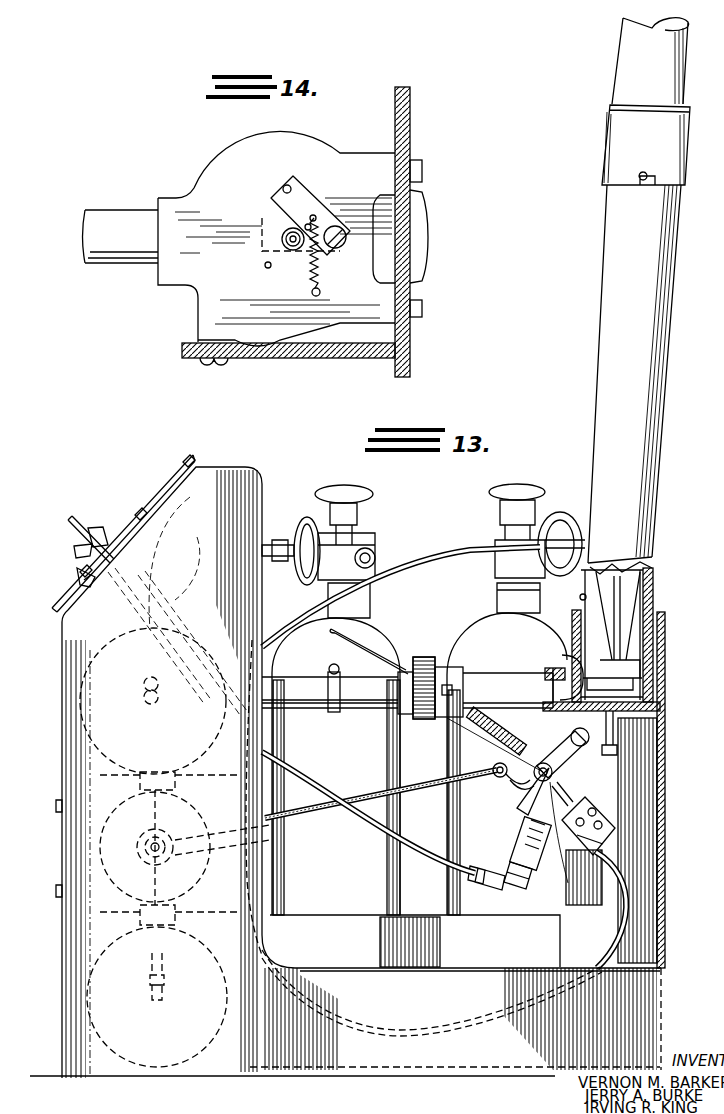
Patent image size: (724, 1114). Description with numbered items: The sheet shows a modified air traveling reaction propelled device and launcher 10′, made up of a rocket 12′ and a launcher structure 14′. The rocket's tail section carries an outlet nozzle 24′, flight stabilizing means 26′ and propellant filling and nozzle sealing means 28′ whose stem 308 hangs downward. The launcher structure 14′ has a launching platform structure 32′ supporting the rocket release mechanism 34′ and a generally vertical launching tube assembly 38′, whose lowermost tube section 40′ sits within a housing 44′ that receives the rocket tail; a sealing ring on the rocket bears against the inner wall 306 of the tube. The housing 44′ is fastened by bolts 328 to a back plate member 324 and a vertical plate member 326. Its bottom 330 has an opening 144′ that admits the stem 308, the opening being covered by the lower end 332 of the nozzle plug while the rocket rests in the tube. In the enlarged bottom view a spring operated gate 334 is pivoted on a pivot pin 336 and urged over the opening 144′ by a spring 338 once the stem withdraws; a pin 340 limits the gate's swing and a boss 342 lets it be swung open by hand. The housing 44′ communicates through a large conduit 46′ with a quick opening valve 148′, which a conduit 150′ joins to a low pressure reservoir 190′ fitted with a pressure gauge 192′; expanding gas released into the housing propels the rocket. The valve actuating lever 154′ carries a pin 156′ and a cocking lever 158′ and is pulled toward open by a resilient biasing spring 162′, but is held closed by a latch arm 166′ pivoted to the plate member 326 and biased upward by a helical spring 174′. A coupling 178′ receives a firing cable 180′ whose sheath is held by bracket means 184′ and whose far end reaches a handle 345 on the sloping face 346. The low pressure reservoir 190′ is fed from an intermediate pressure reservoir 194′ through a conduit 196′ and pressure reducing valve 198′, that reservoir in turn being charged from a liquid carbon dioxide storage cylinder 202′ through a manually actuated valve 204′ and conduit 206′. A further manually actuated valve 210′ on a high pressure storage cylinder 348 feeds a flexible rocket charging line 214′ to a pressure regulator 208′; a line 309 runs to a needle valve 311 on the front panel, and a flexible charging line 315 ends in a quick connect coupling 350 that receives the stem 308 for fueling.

In FIG. 13, the air traveling reaction propelled device and launcher 10′ is at (570, 405).
In FIG. 13, the rocket 12′ is at (654, 562).
In FIG. 13, the launcher structure 14′ is at (276, 488).
In FIG. 13, the outlet nozzle 24′ is at (622, 648).
In FIG. 13, the flight stabilizing means 26′ is at (648, 602).
In FIG. 13, the propellant filling and nozzle sealing means 28′ is at (550, 668).
In FIG. 13, the launching platform structure 32′ is at (415, 1077).
In FIG. 13, the rocket release mechanism 34′ is at (432, 652).
In FIG. 13, the launching tube assembly 38′ is at (597, 107).
In FIG. 13, the lowermost tube section 40′ is at (608, 292).
In FIG. 14, the housing 44′ is at (176, 187).
In FIG. 13, the housing 44′ is at (656, 630).
In FIG. 14, the large conduit 46′ is at (108, 210).
In FIG. 13, the large conduit 46′ is at (500, 675).
In FIG. 14, the opening 144′ is at (264, 265).
In FIG. 13, the opening 144′ is at (615, 720).
In FIG. 13, the quick opening valve 148′ is at (446, 666).
In FIG. 13, the conduit 150′ is at (314, 690).
In FIG. 13, the valve actuating lever 154′ is at (495, 778).
In FIG. 13, the pin 156′ is at (514, 786).
In FIG. 13, the cocking lever 158′ is at (378, 655).
In FIG. 13, the resilient biasing spring 162′ is at (310, 820).
In FIG. 13, the latch arm 166′ is at (505, 868).
In FIG. 13, the helical spring 174′ is at (505, 726).
In FIG. 13, the coupling 178′ is at (568, 878).
In FIG. 13, the firing cable 180′ is at (562, 790).
In FIG. 13, the bracket means 184′ is at (597, 858).
In FIG. 13, the low pressure reservoir 190′ is at (62, 735).
In FIG. 13, the pressure gauge 192′ is at (170, 508).
In FIG. 13, the intermediate pressure reservoir 194′ is at (90, 1008).
In FIG. 13, the conduit 196′ is at (100, 770).
In FIG. 13, the pressure reducing valve 198′ is at (100, 850).
In FIG. 13, the liquid carbon dioxide storage cylinder 202′ is at (362, 741).
In FIG. 13, the manually actuated valve 204′ is at (322, 496).
In FIG. 13, the conduit 206′ is at (276, 562).
In FIG. 13, the pressure regulator 208′ is at (245, 880).
In FIG. 13, the manually actuated valve 210′ is at (500, 520).
In FIG. 13, the flexible rocket charging line 214′ is at (401, 568).
In FIG. 13, the inner wall 306 is at (580, 597).
In FIG. 13, the stem 308 is at (587, 751).
In FIG. 13, the line 309 is at (178, 736).
In FIG. 13, the needle valve 311 is at (62, 633).
In FIG. 13, the flexible charging line 315 is at (380, 846).
In FIG. 14, the back plate member 324 is at (411, 153).
In FIG. 13, the back plate member 324 is at (666, 742).
In FIG. 14, the vertically extending plate member 326 is at (345, 358).
In FIG. 13, the vertically extending plate member 326 is at (655, 830).
In FIG. 14, the bolts 328 is at (426, 240).
In FIG. 14, the bottom of the housing 330 is at (228, 178).
In FIG. 13, the bottom of the housing 330 is at (551, 773).
In FIG. 13, the lower end of the nozzle plug 332 is at (660, 706).
In FIG. 14, the spring operated gate 334 is at (338, 205).
In FIG. 14, the pivot pin 336 is at (337, 251).
In FIG. 14, the spring 338 is at (308, 280).
In FIG. 14, the pin 340 is at (305, 277).
In FIG. 14, the boss 342 is at (286, 184).
In FIG. 13, the handle 345 is at (80, 520).
In FIG. 13, the sloping face 346 is at (75, 576).
In FIG. 13, the high pressure storage cylinder 348 is at (508, 640).
In FIG. 13, the quick connect coupling 350 is at (538, 893).